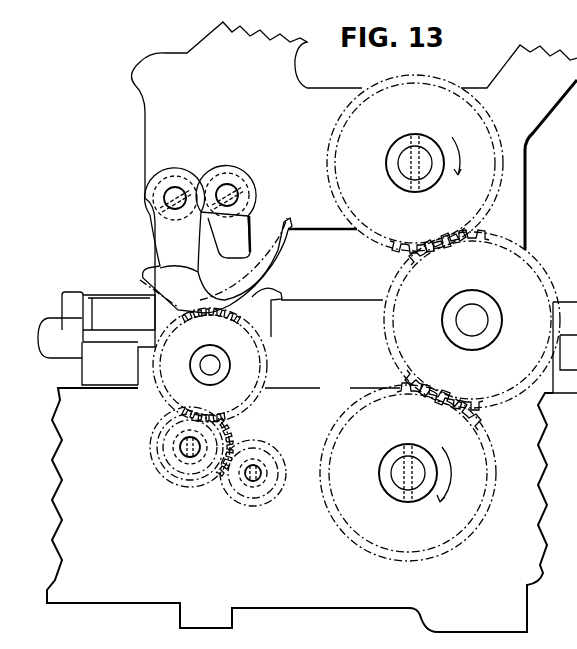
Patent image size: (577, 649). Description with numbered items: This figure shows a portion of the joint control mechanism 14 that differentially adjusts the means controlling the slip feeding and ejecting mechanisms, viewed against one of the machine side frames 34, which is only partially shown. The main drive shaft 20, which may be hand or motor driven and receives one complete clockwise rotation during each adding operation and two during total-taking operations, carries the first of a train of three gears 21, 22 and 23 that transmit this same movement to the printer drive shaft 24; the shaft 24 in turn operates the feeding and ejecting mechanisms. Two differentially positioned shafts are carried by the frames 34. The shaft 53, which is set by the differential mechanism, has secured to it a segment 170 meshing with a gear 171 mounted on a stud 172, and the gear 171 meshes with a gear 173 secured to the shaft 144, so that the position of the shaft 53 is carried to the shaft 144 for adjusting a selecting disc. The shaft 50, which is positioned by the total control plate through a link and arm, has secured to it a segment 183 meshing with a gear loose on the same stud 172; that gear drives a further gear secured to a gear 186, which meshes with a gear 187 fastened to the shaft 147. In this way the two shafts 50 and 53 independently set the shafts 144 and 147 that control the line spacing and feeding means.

The frame 14 is at (569, 533).
The main drive shaft 20 is at (410, 160).
The gear 21 is at (338, 120).
The gear 22 is at (418, 258).
The gear 23 is at (394, 393).
The printer drive shaft 24 is at (398, 465).
The machine side frame 34 is at (145, 130).
The shaft 50 is at (228, 193).
The shaft 53 is at (176, 195).
The shaft 144 is at (185, 444).
The shaft 147 is at (256, 470).
The segment 170 is at (185, 237).
The gear 171 is at (185, 320).
The stud 172 is at (213, 362).
The gear 173 is at (178, 426).
The segment 183 is at (251, 223).
The gear 186 is at (216, 470).
The gear 187 is at (250, 506).